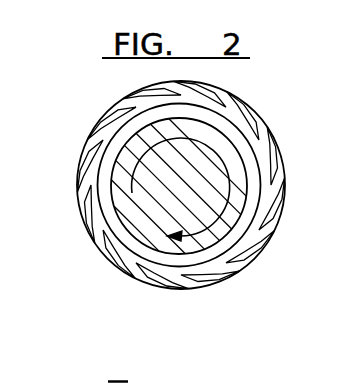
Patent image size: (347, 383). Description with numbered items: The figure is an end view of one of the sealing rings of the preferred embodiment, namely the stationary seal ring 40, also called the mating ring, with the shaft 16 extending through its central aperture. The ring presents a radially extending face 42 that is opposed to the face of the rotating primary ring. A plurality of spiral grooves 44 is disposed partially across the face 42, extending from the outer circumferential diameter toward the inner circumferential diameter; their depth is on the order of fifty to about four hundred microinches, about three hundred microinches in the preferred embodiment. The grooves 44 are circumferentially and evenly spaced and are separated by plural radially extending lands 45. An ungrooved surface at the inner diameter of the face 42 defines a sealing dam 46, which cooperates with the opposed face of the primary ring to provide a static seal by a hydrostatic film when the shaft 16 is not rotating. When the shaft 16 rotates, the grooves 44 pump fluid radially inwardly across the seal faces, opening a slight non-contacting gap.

The shaft 16 is at (221, 186).
The stationary seal ring 40 is at (181, 214).
The radially extending face 42 is at (209, 180).
The spiral grooves 44 is at (229, 199).
The radially extending lands 45 is at (171, 291).
The sealing dam 46 is at (124, 198).